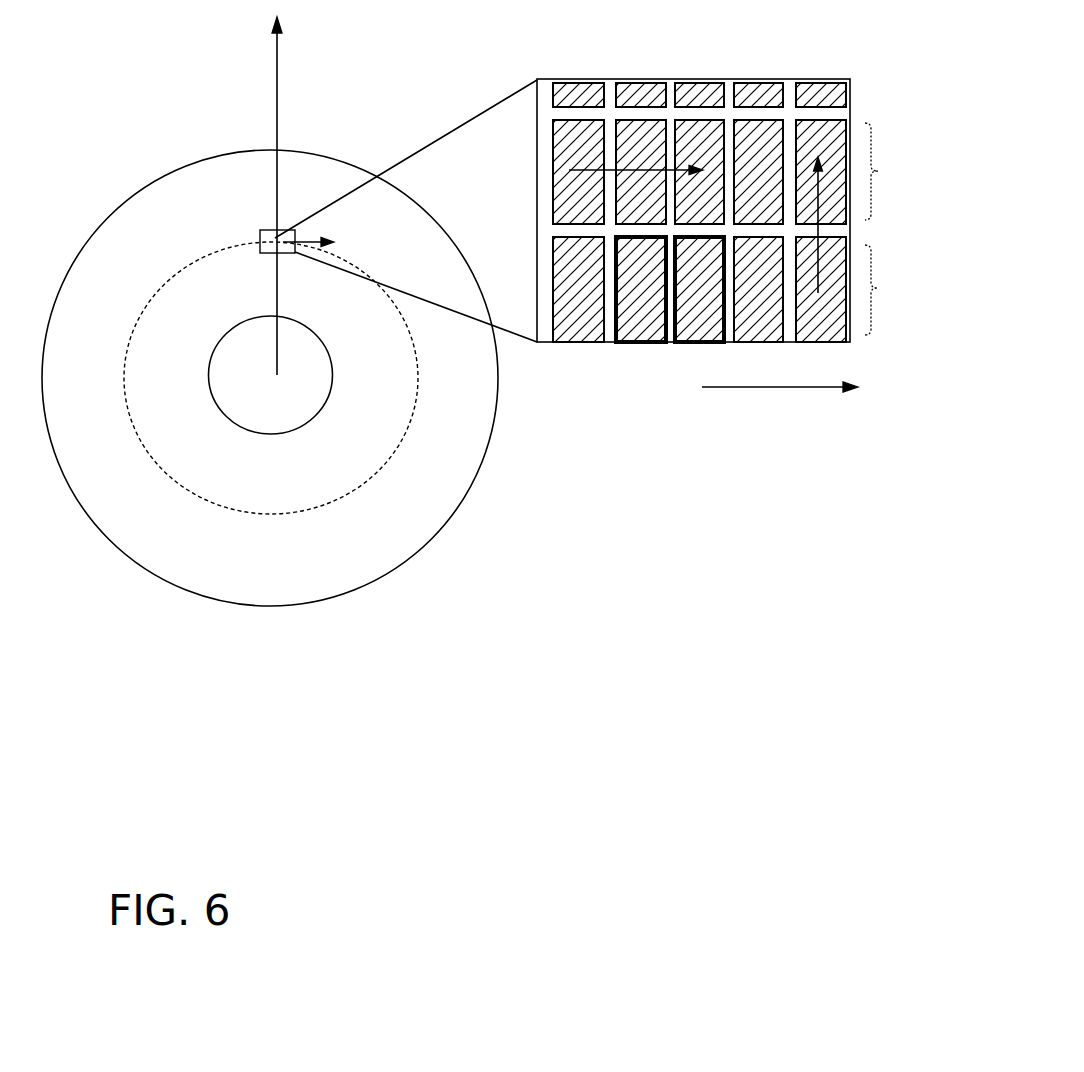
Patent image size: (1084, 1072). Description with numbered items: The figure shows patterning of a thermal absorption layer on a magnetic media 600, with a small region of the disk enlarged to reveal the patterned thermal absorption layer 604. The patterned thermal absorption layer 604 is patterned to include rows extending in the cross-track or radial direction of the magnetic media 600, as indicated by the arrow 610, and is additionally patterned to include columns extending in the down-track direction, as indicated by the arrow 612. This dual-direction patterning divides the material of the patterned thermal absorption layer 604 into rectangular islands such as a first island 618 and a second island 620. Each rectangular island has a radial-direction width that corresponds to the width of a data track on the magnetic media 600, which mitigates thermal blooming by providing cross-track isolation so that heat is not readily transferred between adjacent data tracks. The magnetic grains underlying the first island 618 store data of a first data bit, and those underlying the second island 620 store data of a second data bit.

The magnetic media 600 is at (150, 128).
The patterned thermal absorption layer 604 is at (746, 206).
The arrow 610 is at (820, 225).
The arrow 612 is at (636, 170).
The first island 618 is at (621, 343).
The second island 620 is at (693, 343).